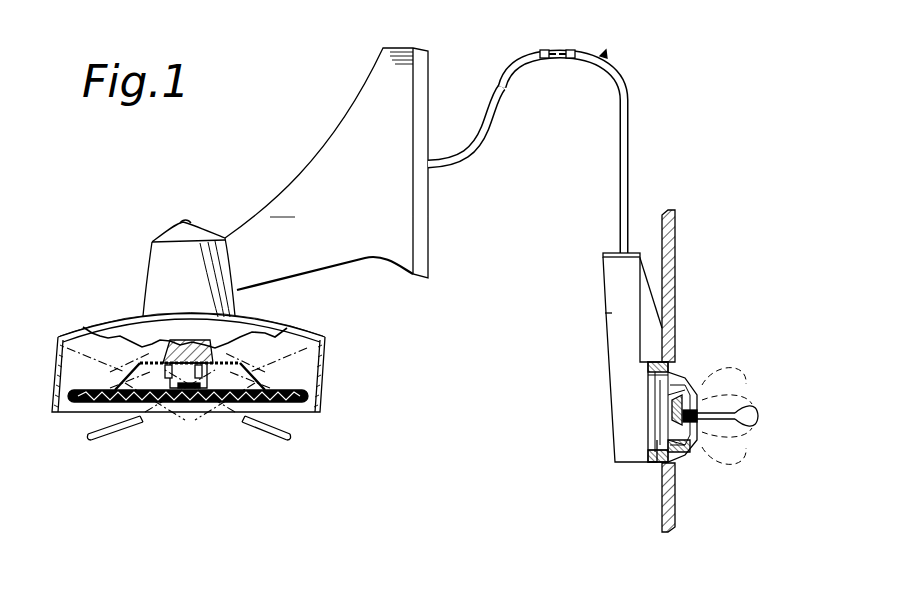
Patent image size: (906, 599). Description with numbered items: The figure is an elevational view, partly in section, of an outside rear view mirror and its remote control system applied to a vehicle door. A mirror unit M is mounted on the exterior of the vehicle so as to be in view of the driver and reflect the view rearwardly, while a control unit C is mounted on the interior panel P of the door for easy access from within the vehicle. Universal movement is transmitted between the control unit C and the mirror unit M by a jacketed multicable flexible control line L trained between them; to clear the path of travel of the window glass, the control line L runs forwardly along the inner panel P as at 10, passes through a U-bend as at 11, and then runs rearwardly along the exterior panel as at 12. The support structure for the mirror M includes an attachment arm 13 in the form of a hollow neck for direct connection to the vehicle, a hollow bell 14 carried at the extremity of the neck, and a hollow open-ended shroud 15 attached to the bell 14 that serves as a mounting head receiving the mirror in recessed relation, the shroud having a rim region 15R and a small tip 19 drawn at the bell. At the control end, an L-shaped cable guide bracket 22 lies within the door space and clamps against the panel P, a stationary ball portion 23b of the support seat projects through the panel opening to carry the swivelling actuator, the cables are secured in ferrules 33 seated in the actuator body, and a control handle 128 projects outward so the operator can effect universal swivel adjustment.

The control line portion trained forwardly along inner panel 10 is at (626, 158).
The U-bend of control line 11 is at (535, 48).
The control line portion trained rearwardly along exterior panel 12 is at (488, 138).
The attachment arm 13 is at (372, 178).
The hollow bell 14 is at (193, 286).
The hollow open-ended shroud 15 is at (321, 386).
The housing rim 15R is at (296, 328).
The nipple 19 is at (191, 223).
The L-shaped cable guide bracket 22 is at (630, 302).
The stationary ball portion 23b is at (690, 387).
The ferrules 33 is at (694, 460).
The wing handle 128 is at (758, 409).
The control line L is at (630, 108).
The mirror unit M is at (78, 402).
The interior panel P is at (670, 265).
The control unit C is at (650, 462).